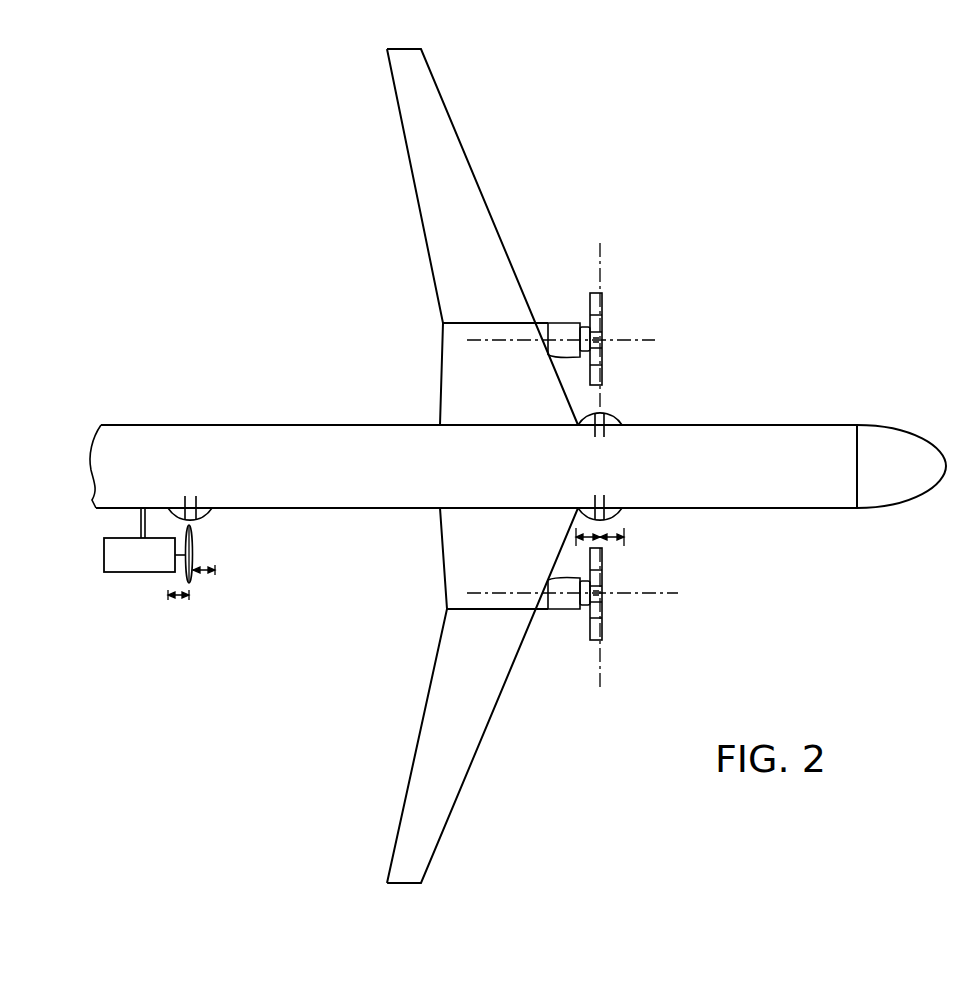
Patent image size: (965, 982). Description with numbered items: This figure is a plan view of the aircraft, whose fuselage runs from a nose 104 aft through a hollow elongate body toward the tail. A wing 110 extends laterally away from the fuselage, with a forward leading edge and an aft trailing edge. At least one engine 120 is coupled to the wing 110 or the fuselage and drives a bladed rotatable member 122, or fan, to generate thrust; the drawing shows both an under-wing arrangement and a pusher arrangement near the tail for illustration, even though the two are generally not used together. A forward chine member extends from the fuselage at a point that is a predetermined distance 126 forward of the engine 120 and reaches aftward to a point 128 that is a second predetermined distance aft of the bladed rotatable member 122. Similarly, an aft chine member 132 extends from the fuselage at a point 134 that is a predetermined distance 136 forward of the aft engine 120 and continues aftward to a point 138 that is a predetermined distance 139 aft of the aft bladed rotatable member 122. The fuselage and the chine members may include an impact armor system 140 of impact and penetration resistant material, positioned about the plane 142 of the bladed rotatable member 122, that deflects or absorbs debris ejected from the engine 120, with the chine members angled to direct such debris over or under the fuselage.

The nose 104 is at (908, 479).
The wing 110 is at (464, 152).
The engine 120 is at (554, 330).
The bladed rotatable member 122 is at (605, 322).
The predetermined distance 126 is at (612, 537).
The point 128 is at (584, 534).
The aft chine member 132 is at (205, 516).
The point 134 is at (208, 507).
The predetermined distance 136 is at (212, 571).
The point 138 is at (171, 506).
The predetermined distance 139 is at (178, 601).
The impact armor system 140 is at (606, 432).
The plane 142 is at (603, 258).